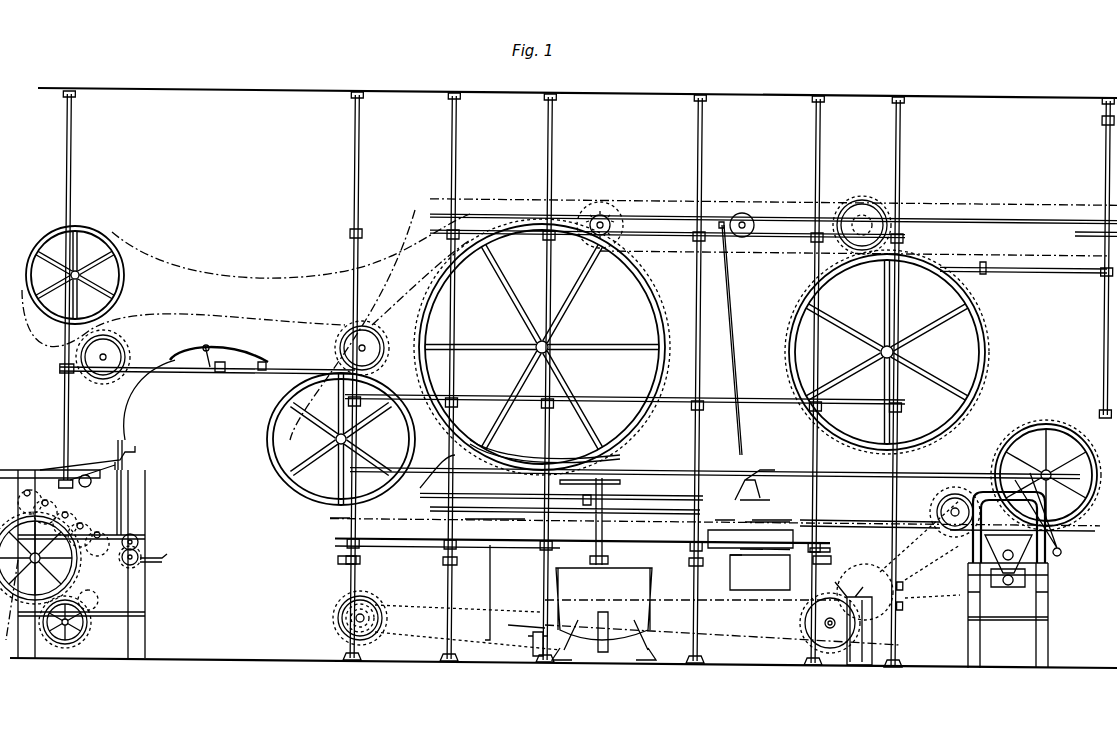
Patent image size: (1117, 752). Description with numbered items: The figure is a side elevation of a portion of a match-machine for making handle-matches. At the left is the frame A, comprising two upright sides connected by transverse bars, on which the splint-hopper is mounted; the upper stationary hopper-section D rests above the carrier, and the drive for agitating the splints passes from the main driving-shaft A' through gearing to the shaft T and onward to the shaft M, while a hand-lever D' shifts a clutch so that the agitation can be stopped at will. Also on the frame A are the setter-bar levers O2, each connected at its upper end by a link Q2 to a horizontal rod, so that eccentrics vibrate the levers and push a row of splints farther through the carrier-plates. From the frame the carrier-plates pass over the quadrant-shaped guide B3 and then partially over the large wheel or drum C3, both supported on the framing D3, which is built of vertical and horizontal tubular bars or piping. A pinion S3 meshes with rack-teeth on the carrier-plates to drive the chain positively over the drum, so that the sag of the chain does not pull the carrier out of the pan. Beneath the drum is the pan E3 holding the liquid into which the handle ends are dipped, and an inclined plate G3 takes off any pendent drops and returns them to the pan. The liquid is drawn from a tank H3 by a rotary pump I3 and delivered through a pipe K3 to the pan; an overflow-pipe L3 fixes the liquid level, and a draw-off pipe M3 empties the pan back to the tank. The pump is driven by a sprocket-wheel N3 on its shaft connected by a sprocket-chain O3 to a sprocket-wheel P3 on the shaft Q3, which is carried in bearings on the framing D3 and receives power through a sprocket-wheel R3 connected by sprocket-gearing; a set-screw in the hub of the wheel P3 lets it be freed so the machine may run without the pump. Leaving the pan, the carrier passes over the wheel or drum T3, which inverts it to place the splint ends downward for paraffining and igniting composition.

The framing D3 is at (68, 410).
The wheel or drum C3 is at (430, 292).
The wheel or drum T3 is at (385, 338).
The pinion S3 is at (598, 214).
The pan E3 is at (622, 474).
The inclined plate G3 is at (440, 478).
The draw-off pipe M3 is at (590, 504).
The overflow-pipe L3 is at (606, 510).
The tank H3 is at (722, 614).
The pipe K3 is at (490, 590).
The sprocket-wheel N3 is at (525, 645).
The pump I3 is at (531, 645).
The sprocket-chain O3 is at (414, 605).
The sprocket-wheel P3 is at (336, 610).
The shaft Q3 is at (356, 622).
The sprocket-wheel R3 is at (372, 628).
The quadrant-shaped guide B3 is at (135, 404).
The link Q2 is at (100, 457).
The lever O2 is at (122, 465).
The fixed hopper-section D is at (89, 540).
The hand-lever D' is at (159, 549).
The frame A is at (82, 564).
The main driving-shaft A' is at (47, 558).
The shaft M is at (128, 562).
The shaft T is at (87, 625).